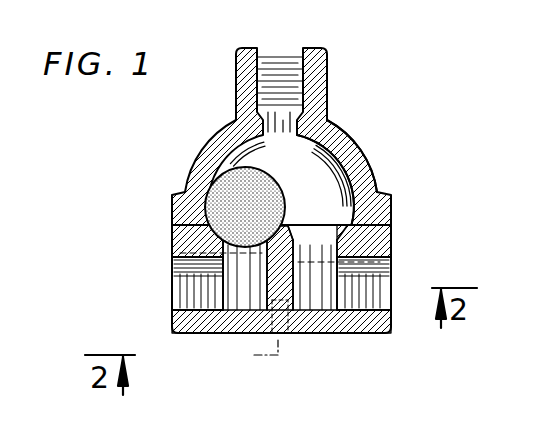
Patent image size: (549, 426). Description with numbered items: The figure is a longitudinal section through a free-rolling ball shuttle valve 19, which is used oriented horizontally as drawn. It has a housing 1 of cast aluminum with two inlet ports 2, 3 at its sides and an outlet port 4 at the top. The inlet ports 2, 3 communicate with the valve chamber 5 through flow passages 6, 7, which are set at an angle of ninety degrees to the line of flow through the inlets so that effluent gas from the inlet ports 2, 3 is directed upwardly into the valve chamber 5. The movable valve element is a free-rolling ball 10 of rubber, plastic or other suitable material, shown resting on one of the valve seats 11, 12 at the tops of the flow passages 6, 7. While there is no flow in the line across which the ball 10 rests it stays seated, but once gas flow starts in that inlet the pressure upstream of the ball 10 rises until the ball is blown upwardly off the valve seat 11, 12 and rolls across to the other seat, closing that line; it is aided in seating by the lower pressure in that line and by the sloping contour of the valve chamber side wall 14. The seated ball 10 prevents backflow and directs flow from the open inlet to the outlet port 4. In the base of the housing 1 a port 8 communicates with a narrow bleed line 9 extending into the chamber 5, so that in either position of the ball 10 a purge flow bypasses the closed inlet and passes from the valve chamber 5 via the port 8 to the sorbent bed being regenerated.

The housing 1 is at (358, 162).
The inlet port 2 is at (182, 273).
The inlet port 3 is at (367, 280).
The outlet port 4 is at (291, 66).
The valve chamber 5 is at (291, 173).
The flow passage 6 is at (251, 294).
The flow passage 7 is at (323, 295).
The port 8 is at (290, 336).
The bleed line 9 is at (291, 219).
The free-rolling ball 10 is at (232, 191).
The valve seat 11 is at (221, 233).
The valve seat 12 is at (338, 226).
The valve chamber side wall 14 is at (340, 186).
The free-rolling ball shuttle valve 19 is at (338, 130).